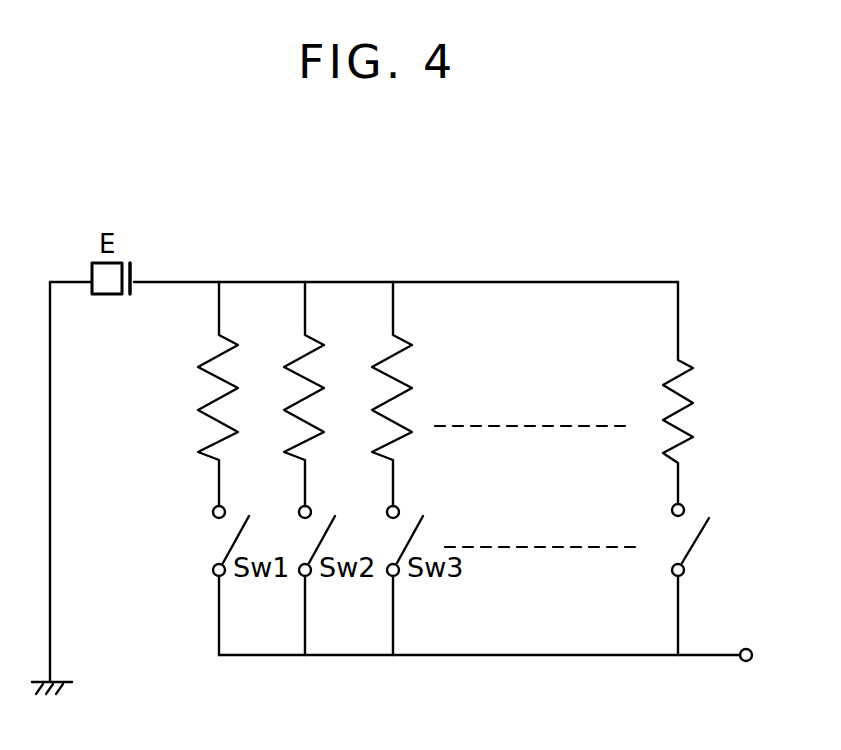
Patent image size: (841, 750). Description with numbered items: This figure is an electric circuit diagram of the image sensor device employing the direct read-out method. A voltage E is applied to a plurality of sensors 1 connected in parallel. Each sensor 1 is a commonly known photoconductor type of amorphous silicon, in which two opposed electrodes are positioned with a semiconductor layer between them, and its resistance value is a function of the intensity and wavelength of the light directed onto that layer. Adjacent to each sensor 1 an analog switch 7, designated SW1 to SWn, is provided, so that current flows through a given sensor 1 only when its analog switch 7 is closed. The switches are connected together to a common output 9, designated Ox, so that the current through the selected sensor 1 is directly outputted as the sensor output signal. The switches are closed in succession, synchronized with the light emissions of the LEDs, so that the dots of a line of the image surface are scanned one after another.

The sensor 1 is at (695, 427).
The analog switch 7 is at (703, 543).
The sensor output 9 is at (722, 652).